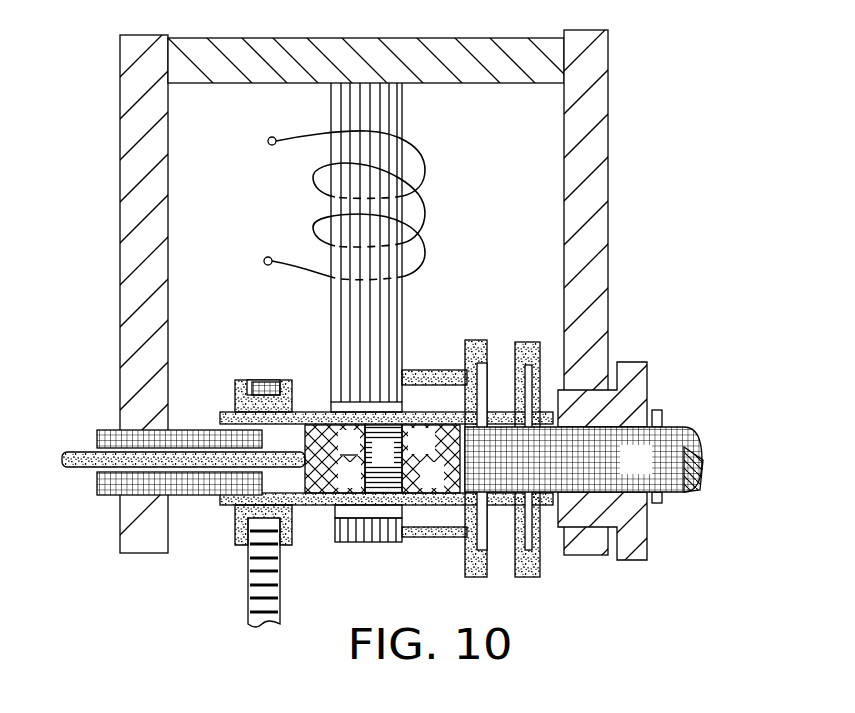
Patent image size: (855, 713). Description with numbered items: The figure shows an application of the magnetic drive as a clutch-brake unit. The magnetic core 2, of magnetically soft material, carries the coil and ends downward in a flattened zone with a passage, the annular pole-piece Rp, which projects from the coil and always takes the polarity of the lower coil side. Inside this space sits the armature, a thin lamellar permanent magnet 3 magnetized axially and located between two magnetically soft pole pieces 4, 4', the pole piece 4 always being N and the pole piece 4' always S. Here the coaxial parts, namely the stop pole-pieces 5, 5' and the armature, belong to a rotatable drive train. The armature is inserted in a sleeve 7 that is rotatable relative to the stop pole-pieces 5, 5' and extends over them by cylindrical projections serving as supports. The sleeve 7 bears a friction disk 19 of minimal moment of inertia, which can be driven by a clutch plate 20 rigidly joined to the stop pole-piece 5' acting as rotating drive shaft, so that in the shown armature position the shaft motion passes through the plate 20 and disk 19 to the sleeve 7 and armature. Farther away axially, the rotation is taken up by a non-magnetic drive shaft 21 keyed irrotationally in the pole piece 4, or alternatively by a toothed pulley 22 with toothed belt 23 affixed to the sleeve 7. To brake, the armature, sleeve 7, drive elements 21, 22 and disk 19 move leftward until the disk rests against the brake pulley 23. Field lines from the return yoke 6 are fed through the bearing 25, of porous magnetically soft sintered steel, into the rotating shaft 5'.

The return yoke 6 is at (235, 57).
The magnetic core 2 is at (382, 112).
The non-magnetic drive shaft 21 is at (76, 453).
The stop pole-piece 5 is at (171, 485).
The stop pole-piece acting as rotating drive shaft 5' is at (584, 459).
The sleeve 7 is at (318, 412).
The pole piece 4 is at (330, 504).
The pole piece 4' is at (431, 459).
The permanent magnet 3 is at (374, 463).
The friction disk 19 is at (514, 360).
The clutch plate 20 is at (540, 358).
The bearing 25 is at (631, 417).
The toothed pulley 22 is at (237, 520).
The toothed belt 23 is at (258, 580).
The annular pole-piece Rp is at (375, 543).